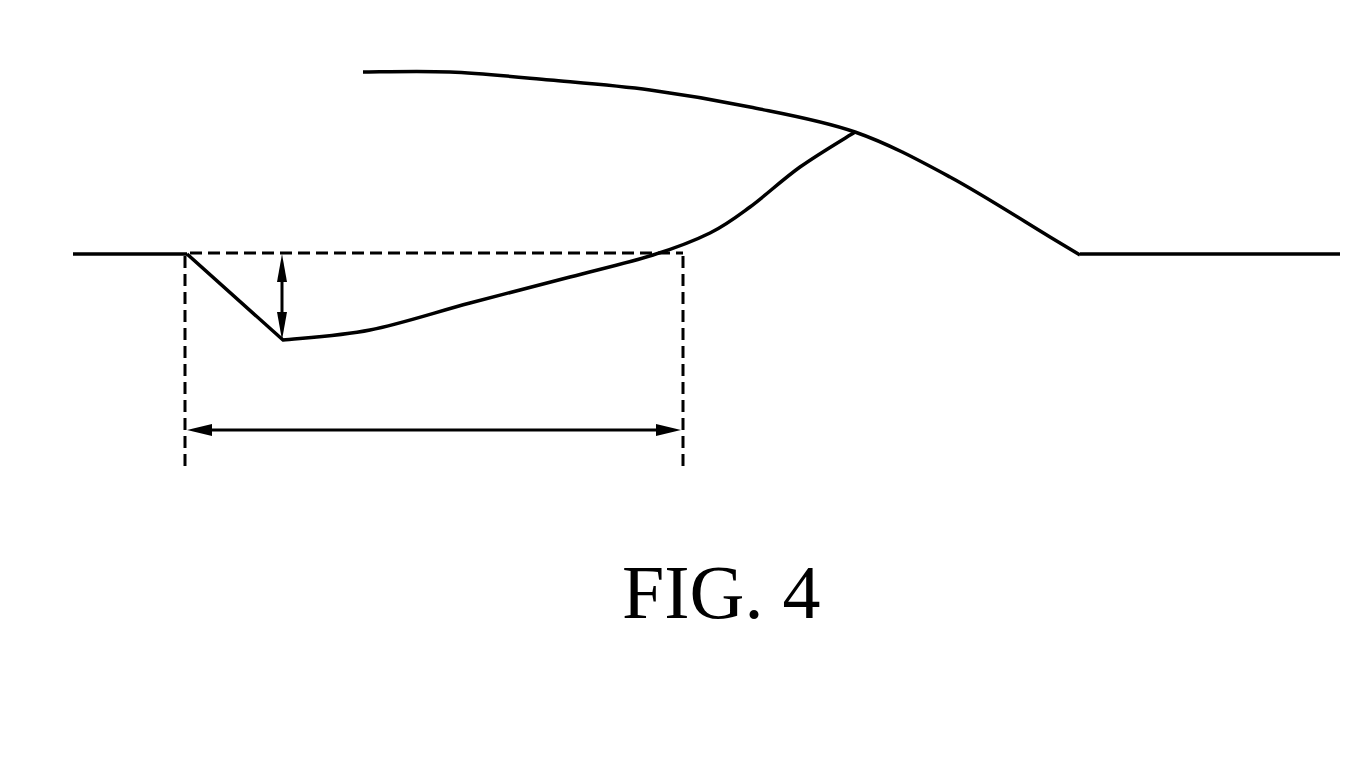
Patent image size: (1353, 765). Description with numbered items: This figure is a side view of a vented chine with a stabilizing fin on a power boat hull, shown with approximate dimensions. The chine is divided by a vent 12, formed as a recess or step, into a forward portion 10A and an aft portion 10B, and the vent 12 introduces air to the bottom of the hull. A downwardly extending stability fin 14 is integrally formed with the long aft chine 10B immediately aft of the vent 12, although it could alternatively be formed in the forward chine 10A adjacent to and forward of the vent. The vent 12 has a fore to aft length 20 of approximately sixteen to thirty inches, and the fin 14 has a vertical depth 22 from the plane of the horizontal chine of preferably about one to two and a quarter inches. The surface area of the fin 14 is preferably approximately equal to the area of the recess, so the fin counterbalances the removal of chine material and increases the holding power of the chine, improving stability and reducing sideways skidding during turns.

The forward portion of chine 10A is at (1250, 255).
The aft portion of chine 10B is at (92, 256).
The vent 12 is at (865, 285).
The stability fin 14 is at (442, 280).
The fore to aft length of vent 20 is at (450, 430).
The vertical depth of fin 22 is at (287, 296).